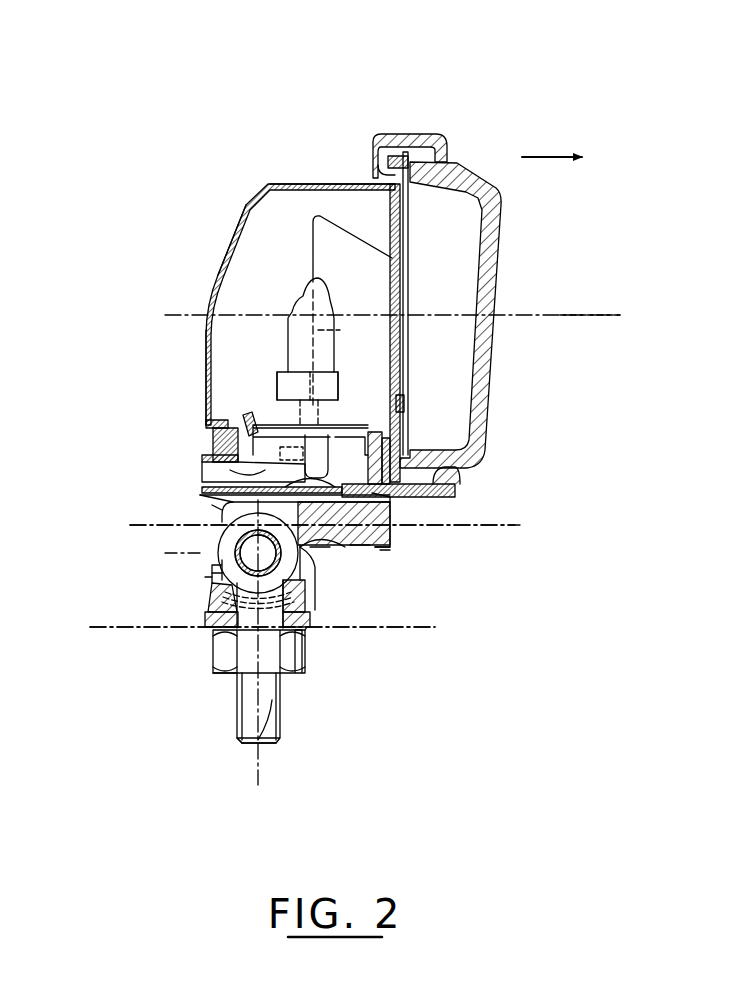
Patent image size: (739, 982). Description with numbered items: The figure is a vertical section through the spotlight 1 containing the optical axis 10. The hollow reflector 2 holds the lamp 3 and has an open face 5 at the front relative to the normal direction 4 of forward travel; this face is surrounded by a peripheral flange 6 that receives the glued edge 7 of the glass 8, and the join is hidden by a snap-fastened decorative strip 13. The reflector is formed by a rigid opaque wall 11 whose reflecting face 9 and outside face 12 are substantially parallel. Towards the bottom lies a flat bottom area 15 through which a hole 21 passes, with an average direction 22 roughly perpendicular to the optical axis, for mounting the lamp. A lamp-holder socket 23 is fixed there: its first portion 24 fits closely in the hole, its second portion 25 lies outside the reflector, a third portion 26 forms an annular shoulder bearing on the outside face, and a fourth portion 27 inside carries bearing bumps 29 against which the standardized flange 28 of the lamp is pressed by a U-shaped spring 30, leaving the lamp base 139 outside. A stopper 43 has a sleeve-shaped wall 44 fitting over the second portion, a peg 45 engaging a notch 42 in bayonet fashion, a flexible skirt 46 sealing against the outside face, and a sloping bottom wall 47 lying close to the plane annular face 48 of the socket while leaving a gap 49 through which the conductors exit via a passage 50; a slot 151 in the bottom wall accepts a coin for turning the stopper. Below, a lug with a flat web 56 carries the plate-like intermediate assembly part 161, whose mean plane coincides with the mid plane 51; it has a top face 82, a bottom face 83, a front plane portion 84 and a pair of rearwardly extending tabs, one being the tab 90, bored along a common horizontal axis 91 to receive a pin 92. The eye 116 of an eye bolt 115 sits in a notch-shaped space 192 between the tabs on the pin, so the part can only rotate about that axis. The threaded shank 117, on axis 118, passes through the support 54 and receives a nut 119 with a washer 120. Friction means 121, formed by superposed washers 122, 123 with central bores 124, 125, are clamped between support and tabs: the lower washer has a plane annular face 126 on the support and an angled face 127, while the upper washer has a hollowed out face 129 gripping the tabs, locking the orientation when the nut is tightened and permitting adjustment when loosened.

The spotlight 1 is at (100, 474).
The hollow reflector 2 is at (216, 277).
The lamp 3 is at (330, 302).
The normal direction of forward vehicle travel 4 is at (548, 157).
The open face 5 is at (400, 262).
The peripheral flange 6 is at (407, 134).
The edge of the glass 7 is at (372, 166).
The glass 8 is at (497, 243).
The reflecting face 9 is at (233, 253).
The optical axis 10 is at (585, 315).
The wall 11 is at (296, 185).
The outside face 12 is at (246, 212).
The decorative strip 13 is at (452, 492).
The flat bottom area 15 is at (228, 420).
The hole 21 is at (340, 405).
The average direction 22 is at (330, 333).
The lamp-holder socket 23 is at (385, 430).
The first portion 24 is at (385, 440).
The second portion 25 is at (203, 470).
The third portion 26 is at (220, 440).
The fourth portion 27 is at (365, 410).
The standardized flange 28 is at (289, 386).
The localized bearing bump 29 is at (250, 400).
The U-shaped spring 30 is at (385, 525).
The notch 42 is at (340, 535).
The stopper 43 is at (215, 492).
The sleeve-shaped wall 44 is at (450, 485).
The peg 45 is at (322, 386).
The flexible skirt 46 is at (210, 430).
The bottom wall 47 is at (212, 505).
The plane annular face 48 is at (273, 458).
The gap 49 is at (197, 487).
The passage 50 is at (200, 455).
The mid plane 51 is at (520, 527).
The support 54 is at (435, 627).
The flat web 56 is at (377, 487).
The top face 82 is at (360, 540).
The bottom face 83 is at (300, 550).
The plane portion 84 is at (390, 540).
The tab 90 is at (213, 545).
The common horizontal axis 91 is at (212, 577).
The pin 92 is at (203, 627).
The eye bolt 115 is at (283, 740).
The eye 116 is at (212, 573).
The threaded shank 117 is at (272, 700).
The shank axis 118 is at (232, 743).
The nut 119 is at (318, 668).
The washer 120 is at (312, 645).
The friction means 121 is at (190, 618).
The washer 122 is at (203, 628).
The washer 123 is at (190, 616).
The central bore 124 is at (232, 673).
The central bore 125 is at (308, 617).
The plane annular face 126 is at (302, 663).
The opposite plane annular face 127 is at (322, 608).
The hollowed out face 129 is at (203, 598).
The base 139 is at (400, 408).
The slot 151 is at (330, 545).
The intermediate assembly part 161 is at (390, 548).
The notch-shaped space 192 is at (235, 515).